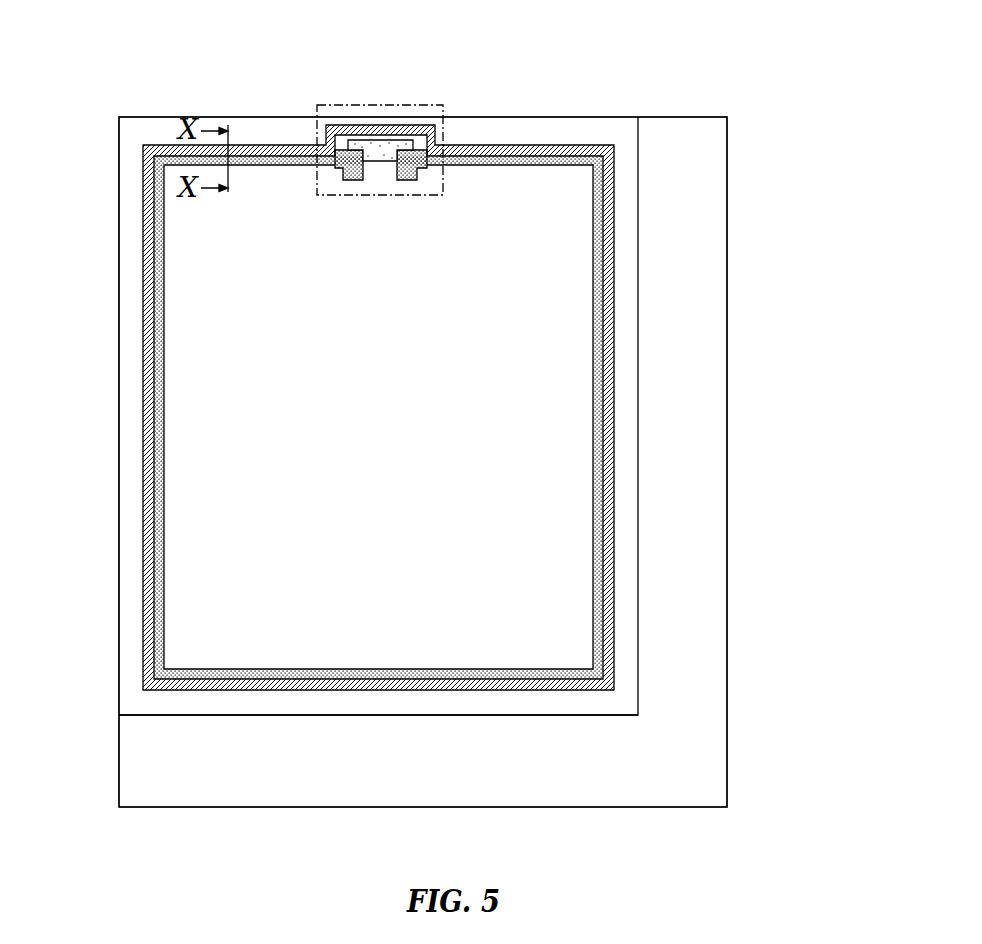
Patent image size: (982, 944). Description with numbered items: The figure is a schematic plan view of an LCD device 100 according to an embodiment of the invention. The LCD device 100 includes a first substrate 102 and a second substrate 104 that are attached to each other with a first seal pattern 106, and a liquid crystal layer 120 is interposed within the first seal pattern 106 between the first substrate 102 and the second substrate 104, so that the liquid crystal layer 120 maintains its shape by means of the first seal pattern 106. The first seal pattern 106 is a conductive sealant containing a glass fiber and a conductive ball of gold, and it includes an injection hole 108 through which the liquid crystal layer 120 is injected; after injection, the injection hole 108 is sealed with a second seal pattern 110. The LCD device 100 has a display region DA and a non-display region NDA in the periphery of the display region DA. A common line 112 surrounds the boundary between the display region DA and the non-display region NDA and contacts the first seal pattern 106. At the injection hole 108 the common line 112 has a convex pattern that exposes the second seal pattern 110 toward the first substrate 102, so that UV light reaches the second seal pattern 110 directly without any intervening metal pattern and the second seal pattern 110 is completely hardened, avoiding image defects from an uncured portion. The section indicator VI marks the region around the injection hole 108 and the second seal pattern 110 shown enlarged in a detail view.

The LCD device 100 is at (768, 262).
The first substrate 102 is at (727, 490).
The second substrate 104 is at (597, 717).
The first seal pattern 106 is at (592, 464).
The injection hole 108 is at (377, 182).
The second seal pattern 110 is at (372, 147).
The common line 112 is at (613, 372).
The liquid crystal layer 120 is at (192, 383).
The display region DA is at (524, 172).
The non-display region NDA is at (672, 137).
The section line VI is at (400, 103).